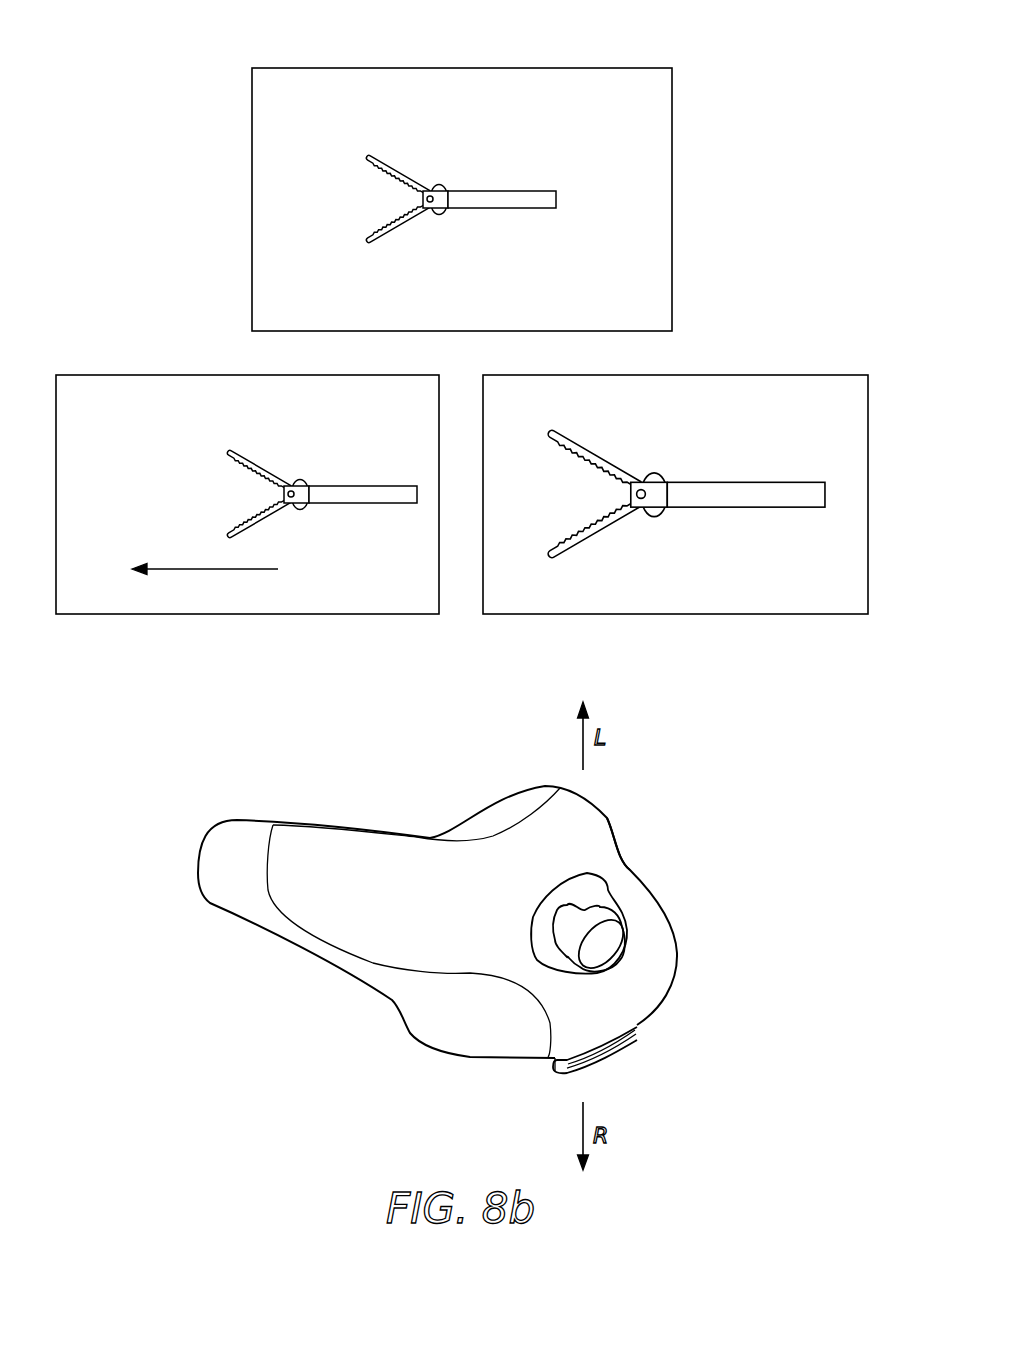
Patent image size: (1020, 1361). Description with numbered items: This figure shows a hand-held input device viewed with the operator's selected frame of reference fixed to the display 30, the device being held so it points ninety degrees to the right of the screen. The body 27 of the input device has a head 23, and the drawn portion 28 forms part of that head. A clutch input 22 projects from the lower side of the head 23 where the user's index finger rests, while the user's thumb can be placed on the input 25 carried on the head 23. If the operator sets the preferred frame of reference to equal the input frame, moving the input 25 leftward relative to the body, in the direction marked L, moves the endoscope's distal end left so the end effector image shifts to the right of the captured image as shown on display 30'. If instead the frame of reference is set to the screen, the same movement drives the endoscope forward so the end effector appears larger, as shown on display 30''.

The display 30 is at (462, 171).
The display 30' is at (247, 465).
The display 30'' is at (675, 465).
The head 23 is at (670, 963).
The body 27 is at (370, 840).
The concave grip portion 28 is at (620, 853).
The input 25 is at (585, 977).
The clutch input 22 is at (605, 1057).